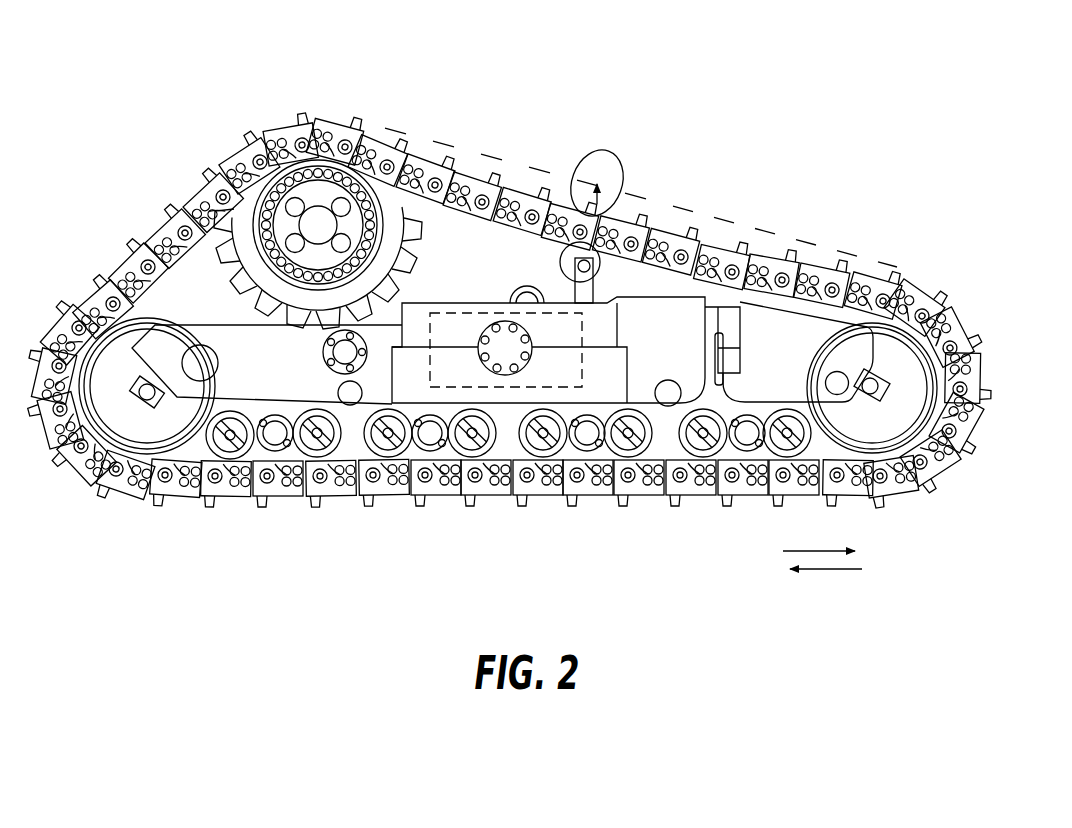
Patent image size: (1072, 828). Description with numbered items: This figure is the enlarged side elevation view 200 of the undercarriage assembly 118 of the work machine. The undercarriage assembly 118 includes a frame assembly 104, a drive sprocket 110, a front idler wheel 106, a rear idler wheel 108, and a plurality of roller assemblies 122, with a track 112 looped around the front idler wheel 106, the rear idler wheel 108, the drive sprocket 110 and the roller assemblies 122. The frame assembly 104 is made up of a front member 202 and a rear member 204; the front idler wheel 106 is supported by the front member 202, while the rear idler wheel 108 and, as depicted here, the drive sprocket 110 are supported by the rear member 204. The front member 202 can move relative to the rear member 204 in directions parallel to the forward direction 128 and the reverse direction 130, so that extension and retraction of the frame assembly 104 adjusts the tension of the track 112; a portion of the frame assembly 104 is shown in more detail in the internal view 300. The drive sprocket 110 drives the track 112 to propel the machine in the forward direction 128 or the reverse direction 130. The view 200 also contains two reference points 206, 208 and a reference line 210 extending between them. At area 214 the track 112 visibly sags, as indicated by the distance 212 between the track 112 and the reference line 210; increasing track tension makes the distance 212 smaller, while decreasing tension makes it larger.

The side elevation view 200 is at (852, 152).
The undercarriage assembly 118 is at (128, 186).
The drive sprocket 110 is at (285, 228).
The reference point 206 is at (346, 126).
The reference line 210 is at (479, 153).
The area 214 is at (580, 150).
The distance 212 is at (614, 196).
The reference point 208 is at (888, 266).
The frame assembly 104 is at (502, 311).
The front member 202 is at (757, 337).
The front idler wheel 106 is at (907, 385).
The rear member 204 is at (167, 342).
The rear idler wheel 108 is at (120, 418).
The roller assemblies 122 is at (325, 447).
The internal view 300 is at (504, 392).
The track 112 is at (603, 497).
The forward direction 128 is at (823, 549).
The reverse direction 130 is at (820, 573).